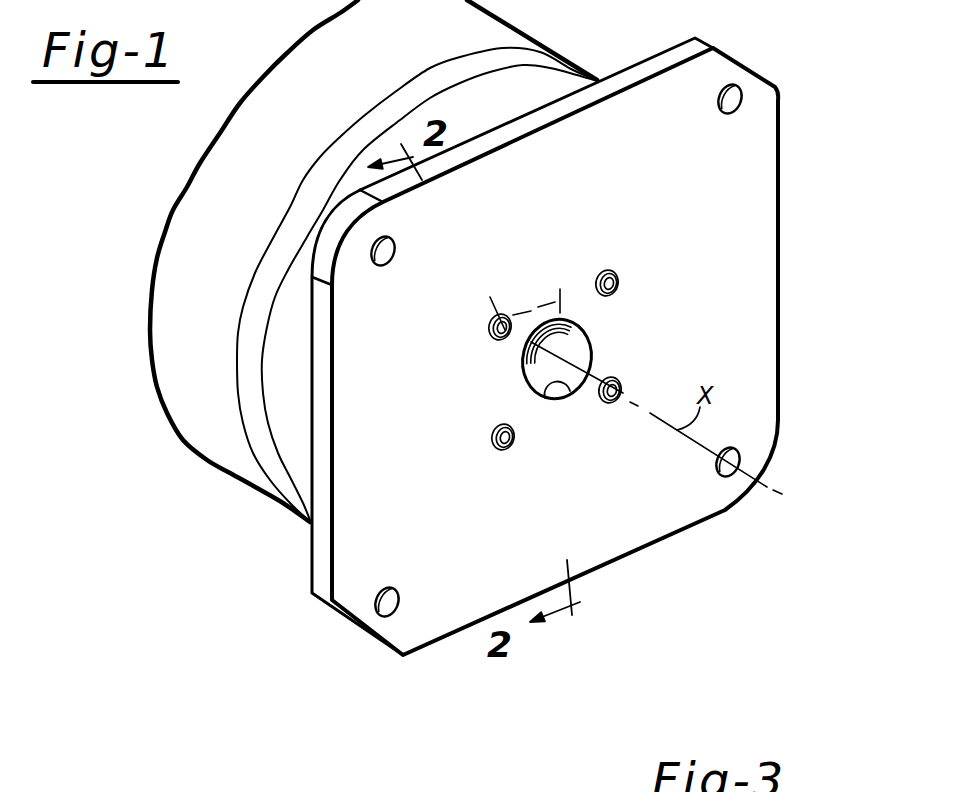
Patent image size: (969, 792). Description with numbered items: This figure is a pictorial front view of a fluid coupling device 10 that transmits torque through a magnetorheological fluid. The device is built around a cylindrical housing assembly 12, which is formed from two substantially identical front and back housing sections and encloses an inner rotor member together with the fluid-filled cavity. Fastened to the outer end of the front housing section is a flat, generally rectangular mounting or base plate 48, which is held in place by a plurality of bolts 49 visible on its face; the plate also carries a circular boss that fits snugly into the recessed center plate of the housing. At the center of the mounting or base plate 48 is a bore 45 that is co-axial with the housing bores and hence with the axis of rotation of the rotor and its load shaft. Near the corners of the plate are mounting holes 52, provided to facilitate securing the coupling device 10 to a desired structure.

The fluid coupling device 10 is at (236, 509).
The cylindrical housing assembly 12 is at (163, 432).
The bore 45 is at (568, 392).
The mounting or base plate 48 is at (752, 278).
The bolts 49 is at (617, 273).
The mounting holes 52 is at (741, 106).